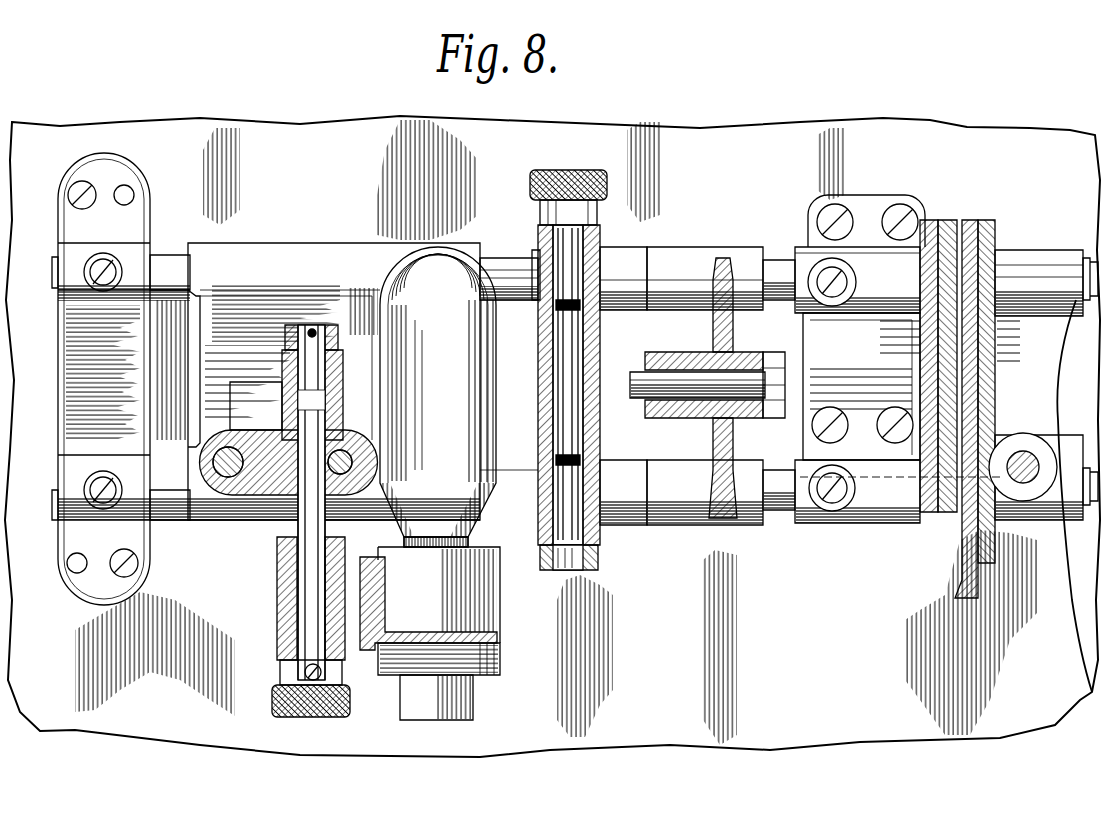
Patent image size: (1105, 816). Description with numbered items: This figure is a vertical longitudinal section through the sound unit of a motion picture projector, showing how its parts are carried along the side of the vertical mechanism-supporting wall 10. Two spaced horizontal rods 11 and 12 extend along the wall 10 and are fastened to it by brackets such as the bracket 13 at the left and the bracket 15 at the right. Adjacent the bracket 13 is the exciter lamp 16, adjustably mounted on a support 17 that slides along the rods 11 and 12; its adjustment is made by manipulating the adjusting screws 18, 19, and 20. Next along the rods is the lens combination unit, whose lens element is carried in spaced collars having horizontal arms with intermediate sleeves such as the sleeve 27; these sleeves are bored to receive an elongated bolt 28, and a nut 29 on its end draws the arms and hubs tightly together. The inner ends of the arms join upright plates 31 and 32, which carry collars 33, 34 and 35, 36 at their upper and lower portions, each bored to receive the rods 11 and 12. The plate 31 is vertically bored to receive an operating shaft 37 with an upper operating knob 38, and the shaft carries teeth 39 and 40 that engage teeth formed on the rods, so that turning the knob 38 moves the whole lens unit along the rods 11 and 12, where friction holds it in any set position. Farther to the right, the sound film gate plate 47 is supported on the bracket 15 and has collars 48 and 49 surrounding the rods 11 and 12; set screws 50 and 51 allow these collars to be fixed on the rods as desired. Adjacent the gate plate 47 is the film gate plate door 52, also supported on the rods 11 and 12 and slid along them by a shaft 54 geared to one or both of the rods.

The vertical mechanism-supporting wall 10 is at (363, 365).
The rod 11 is at (165, 258).
The rod 12 is at (165, 505).
The bracket 13 is at (117, 175).
The bracket 15 is at (898, 182).
The exciter lamp 16 is at (430, 483).
The support 17 is at (290, 350).
The adjusting screw 18 is at (236, 452).
The adjusting screw 19 is at (360, 528).
The adjusting screw 20 is at (270, 690).
The sleeve 27 is at (645, 360).
The elongated bolt 28 is at (640, 402).
The nut 29 is at (780, 352).
The upright plate 31 is at (545, 345).
The upright plate 32 is at (713, 338).
The collar 33 is at (625, 247).
The collar 34 is at (623, 492).
The collar 35 is at (721, 278).
The collar 36 is at (721, 492).
The operating shaft 37 is at (550, 410).
The operating knob 38 is at (590, 158).
The teeth 39 is at (532, 252).
The teeth 40 is at (538, 535).
The sound film gate plate 47 is at (930, 362).
The collar 48 is at (857, 280).
The collar 49 is at (857, 491).
The set screw 50 is at (822, 276).
The set screw 51 is at (838, 500).
The film gate plate door 52 is at (995, 555).
The shaft 54 is at (1020, 452).